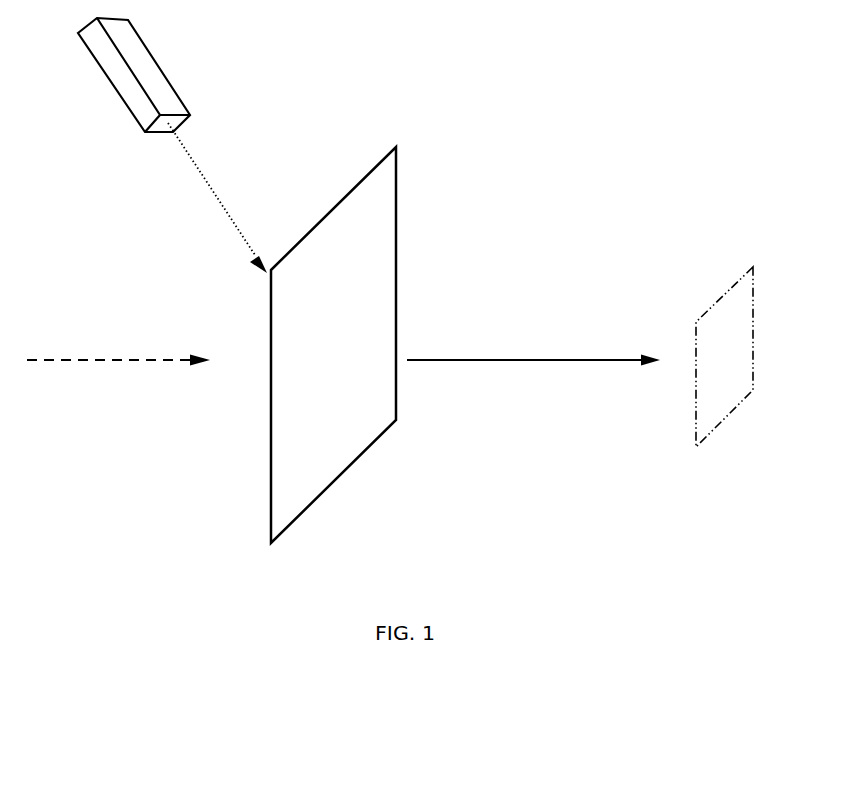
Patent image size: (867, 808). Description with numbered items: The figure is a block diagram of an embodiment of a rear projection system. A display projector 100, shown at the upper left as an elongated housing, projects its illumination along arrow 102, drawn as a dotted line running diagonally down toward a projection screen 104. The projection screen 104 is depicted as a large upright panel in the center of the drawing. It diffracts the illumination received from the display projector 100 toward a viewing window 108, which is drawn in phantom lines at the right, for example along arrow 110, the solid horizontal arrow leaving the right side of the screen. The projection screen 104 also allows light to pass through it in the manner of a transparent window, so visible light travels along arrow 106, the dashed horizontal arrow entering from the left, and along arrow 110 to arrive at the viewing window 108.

The display projector 100 is at (163, 88).
The arrow 102 is at (235, 227).
The projection screen 104 is at (383, 193).
The arrow 106 is at (107, 360).
The viewing window 108 is at (712, 408).
The arrow 110 is at (505, 360).